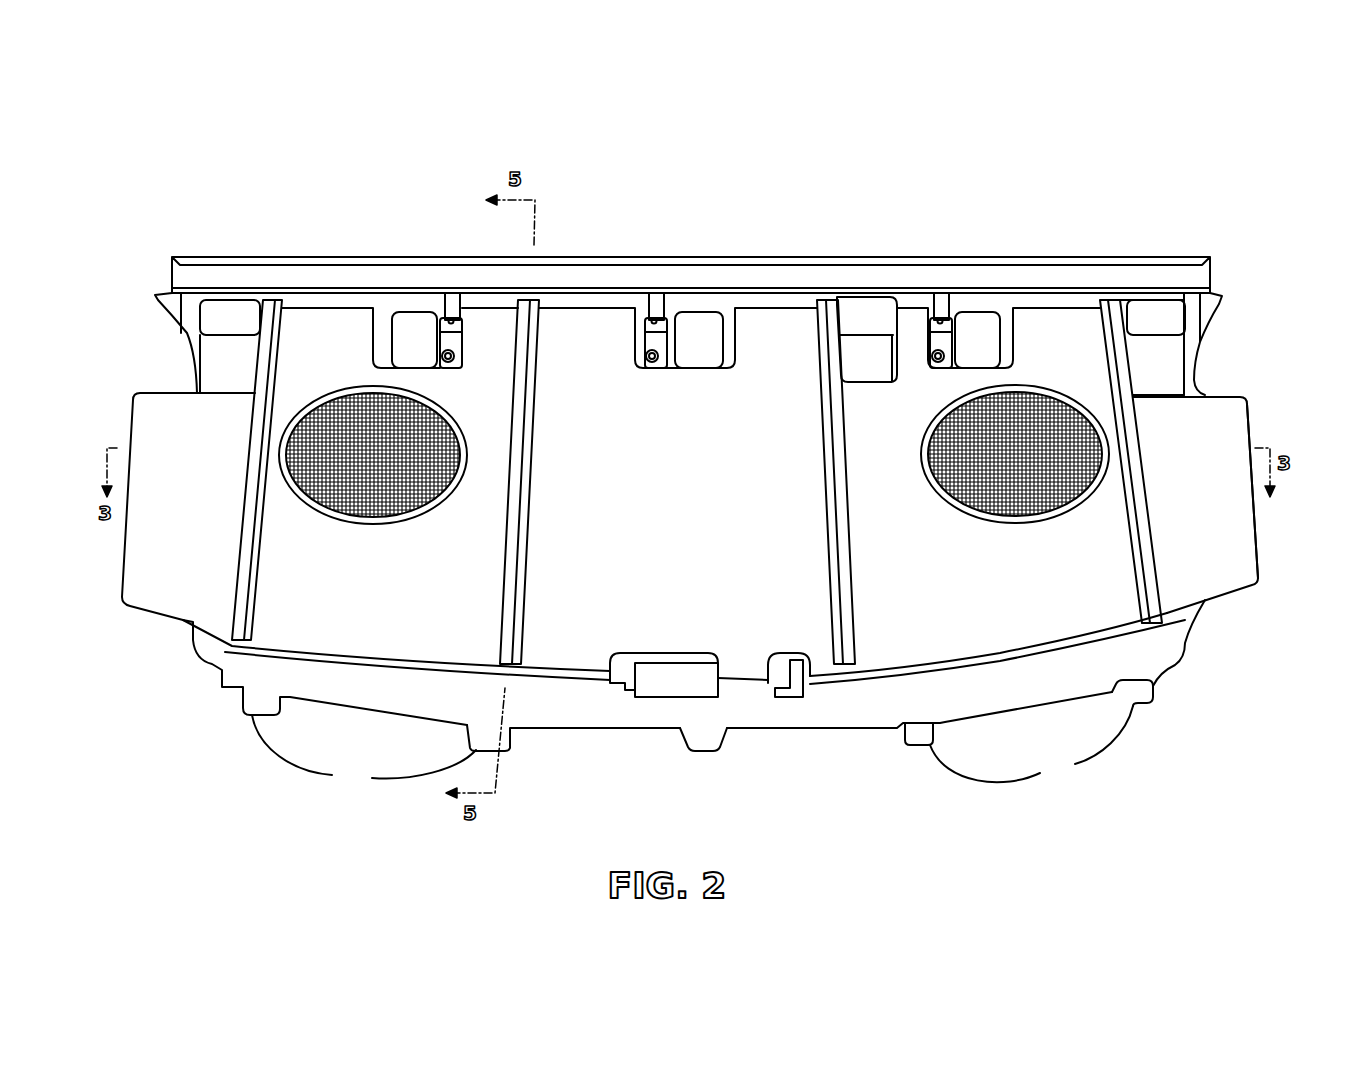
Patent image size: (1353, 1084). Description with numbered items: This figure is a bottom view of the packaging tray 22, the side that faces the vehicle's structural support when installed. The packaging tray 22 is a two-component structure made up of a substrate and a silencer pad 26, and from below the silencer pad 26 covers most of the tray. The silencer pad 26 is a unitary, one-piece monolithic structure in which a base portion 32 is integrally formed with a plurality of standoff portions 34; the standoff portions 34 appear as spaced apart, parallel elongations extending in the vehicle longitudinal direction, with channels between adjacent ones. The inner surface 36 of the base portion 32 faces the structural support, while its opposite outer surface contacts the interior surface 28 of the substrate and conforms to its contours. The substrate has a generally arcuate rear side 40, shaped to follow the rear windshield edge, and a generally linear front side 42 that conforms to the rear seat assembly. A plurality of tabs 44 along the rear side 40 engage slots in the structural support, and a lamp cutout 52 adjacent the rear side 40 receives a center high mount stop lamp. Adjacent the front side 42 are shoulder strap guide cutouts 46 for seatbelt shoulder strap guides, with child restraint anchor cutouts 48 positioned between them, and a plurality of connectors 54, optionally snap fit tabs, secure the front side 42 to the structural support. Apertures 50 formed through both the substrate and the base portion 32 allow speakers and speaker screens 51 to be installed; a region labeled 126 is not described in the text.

The packaging tray 22 is at (1107, 180).
The silencer pad 26 is at (1258, 545).
The interior surface 28 is at (1139, 372).
The base portion 32 is at (1240, 523).
The standoff portions 34 is at (513, 593).
The inner surface 36 is at (661, 471).
The rear side 40 is at (833, 729).
The front side 42 is at (828, 256).
The tabs 44 is at (712, 806).
The shoulder strap guide cutouts 46 is at (243, 312).
The child restraint anchor cutouts 48 is at (401, 349).
The apertures 50 is at (321, 400).
The speaker screens 51 is at (361, 466).
The lamp cutout 52 is at (661, 689).
The connectors 54 is at (447, 325).
The end flange 126 is at (1200, 345).